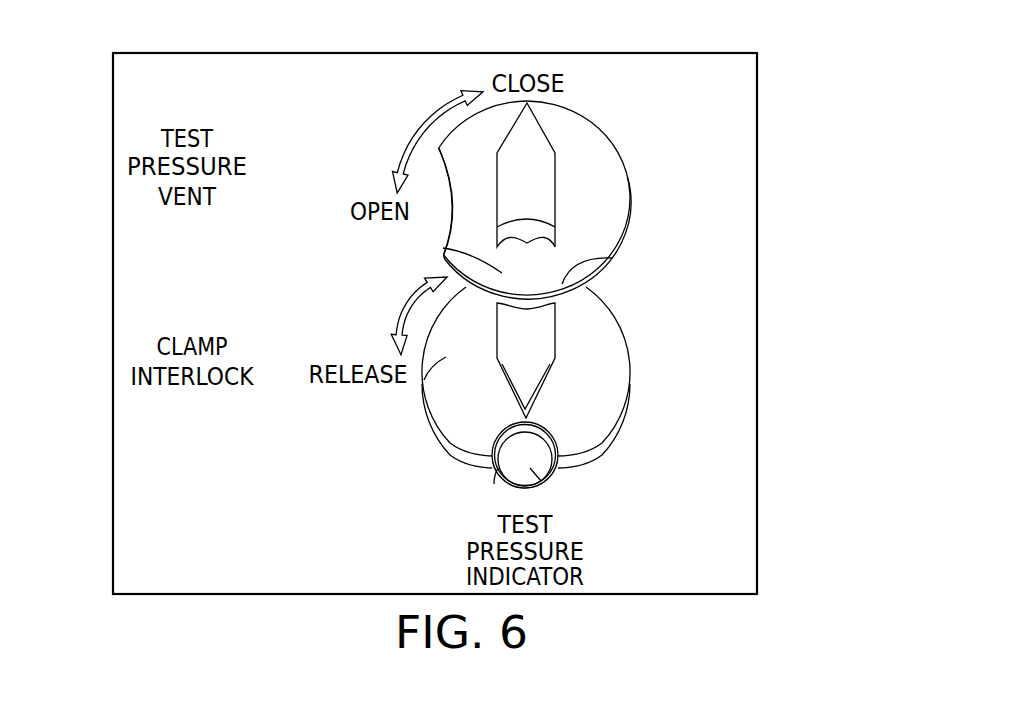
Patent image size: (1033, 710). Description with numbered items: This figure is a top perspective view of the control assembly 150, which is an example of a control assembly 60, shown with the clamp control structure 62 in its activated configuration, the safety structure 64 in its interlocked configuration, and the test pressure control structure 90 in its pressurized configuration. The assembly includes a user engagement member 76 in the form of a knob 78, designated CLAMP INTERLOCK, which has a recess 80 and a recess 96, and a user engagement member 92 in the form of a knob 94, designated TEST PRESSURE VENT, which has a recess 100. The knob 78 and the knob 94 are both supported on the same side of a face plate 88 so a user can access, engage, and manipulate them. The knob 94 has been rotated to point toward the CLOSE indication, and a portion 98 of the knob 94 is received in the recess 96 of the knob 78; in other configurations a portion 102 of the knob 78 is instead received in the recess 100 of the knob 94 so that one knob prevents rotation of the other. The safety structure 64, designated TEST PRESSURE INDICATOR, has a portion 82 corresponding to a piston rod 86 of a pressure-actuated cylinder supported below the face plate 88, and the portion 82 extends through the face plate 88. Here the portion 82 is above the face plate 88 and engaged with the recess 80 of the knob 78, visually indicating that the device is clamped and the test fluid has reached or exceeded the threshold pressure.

The control assembly 150 is at (598, 51).
The control assembly 60 is at (667, 25).
The face plate 88 is at (742, 88).
The user engagement member 76 is at (619, 314).
The knob 78 is at (624, 336).
The portion 102 is at (424, 380).
The clamp control structure 62 is at (378, 306).
The portion 82 is at (548, 494).
The recess 80 is at (540, 425).
The piston rod 86 is at (557, 482).
The safety structure 64 is at (494, 484).
The user engagement member 92 is at (607, 128).
The knob 94 is at (617, 150).
The recess 96 is at (606, 259).
The portion 98 is at (443, 247).
The recess 100 is at (448, 183).
The test pressure control structure 90 is at (398, 113).